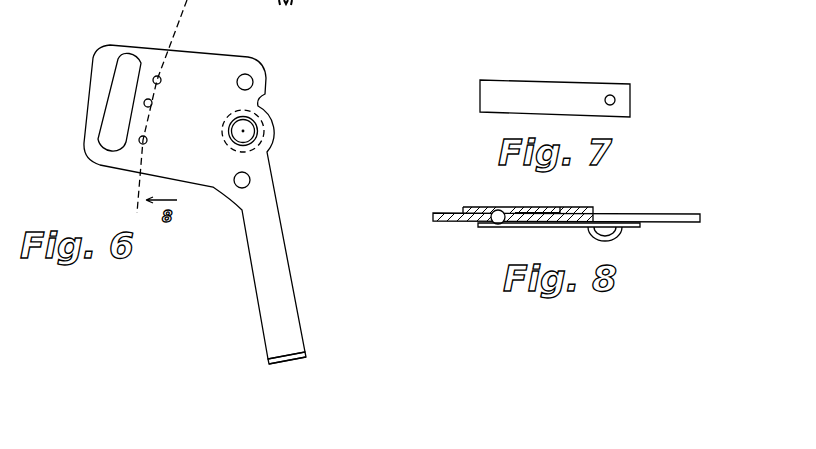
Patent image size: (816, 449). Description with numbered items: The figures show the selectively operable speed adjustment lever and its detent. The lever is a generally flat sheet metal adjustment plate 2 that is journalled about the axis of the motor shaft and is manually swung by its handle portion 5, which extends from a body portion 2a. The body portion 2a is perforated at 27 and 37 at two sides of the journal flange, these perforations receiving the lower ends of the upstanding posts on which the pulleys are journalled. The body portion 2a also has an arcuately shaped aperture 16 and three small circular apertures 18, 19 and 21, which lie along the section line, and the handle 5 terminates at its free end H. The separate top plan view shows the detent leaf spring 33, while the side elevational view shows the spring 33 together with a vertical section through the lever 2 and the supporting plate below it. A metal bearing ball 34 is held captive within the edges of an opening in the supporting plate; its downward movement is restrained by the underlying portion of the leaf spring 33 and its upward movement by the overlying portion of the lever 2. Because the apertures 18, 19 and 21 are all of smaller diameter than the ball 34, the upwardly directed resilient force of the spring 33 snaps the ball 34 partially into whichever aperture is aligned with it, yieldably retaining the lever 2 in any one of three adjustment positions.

In FIG. 6, the adjustment plate 2 is at (212, 58).
In FIG. 8, the adjustment plate 2 is at (622, 212).
In FIG. 6, the body portion 2a is at (268, 118).
In FIG. 6, the handle portion 5 is at (282, 307).
In FIG. 6, the arcuately shaped aperture 16 is at (115, 78).
In FIG. 6, the small circular aperture 18 is at (161, 80).
In FIG. 8, the small circular aperture 18 is at (494, 211).
In FIG. 6, the small circular aperture 19 is at (152, 103).
In FIG. 8, the small circular aperture 19 is at (527, 212).
In FIG. 6, the small circular aperture 21 is at (147, 140).
In FIG. 8, the small circular aperture 21 is at (560, 212).
In FIG. 6, the perforation 27 is at (251, 80).
In FIG. 7, the leaf spring 33 is at (588, 102).
In FIG. 8, the leaf spring 33 is at (530, 230).
In FIG. 8, the bearing ball 34 is at (478, 228).
In FIG. 6, the perforation 37 is at (248, 178).
In FIG. 6, the end H is at (282, 358).